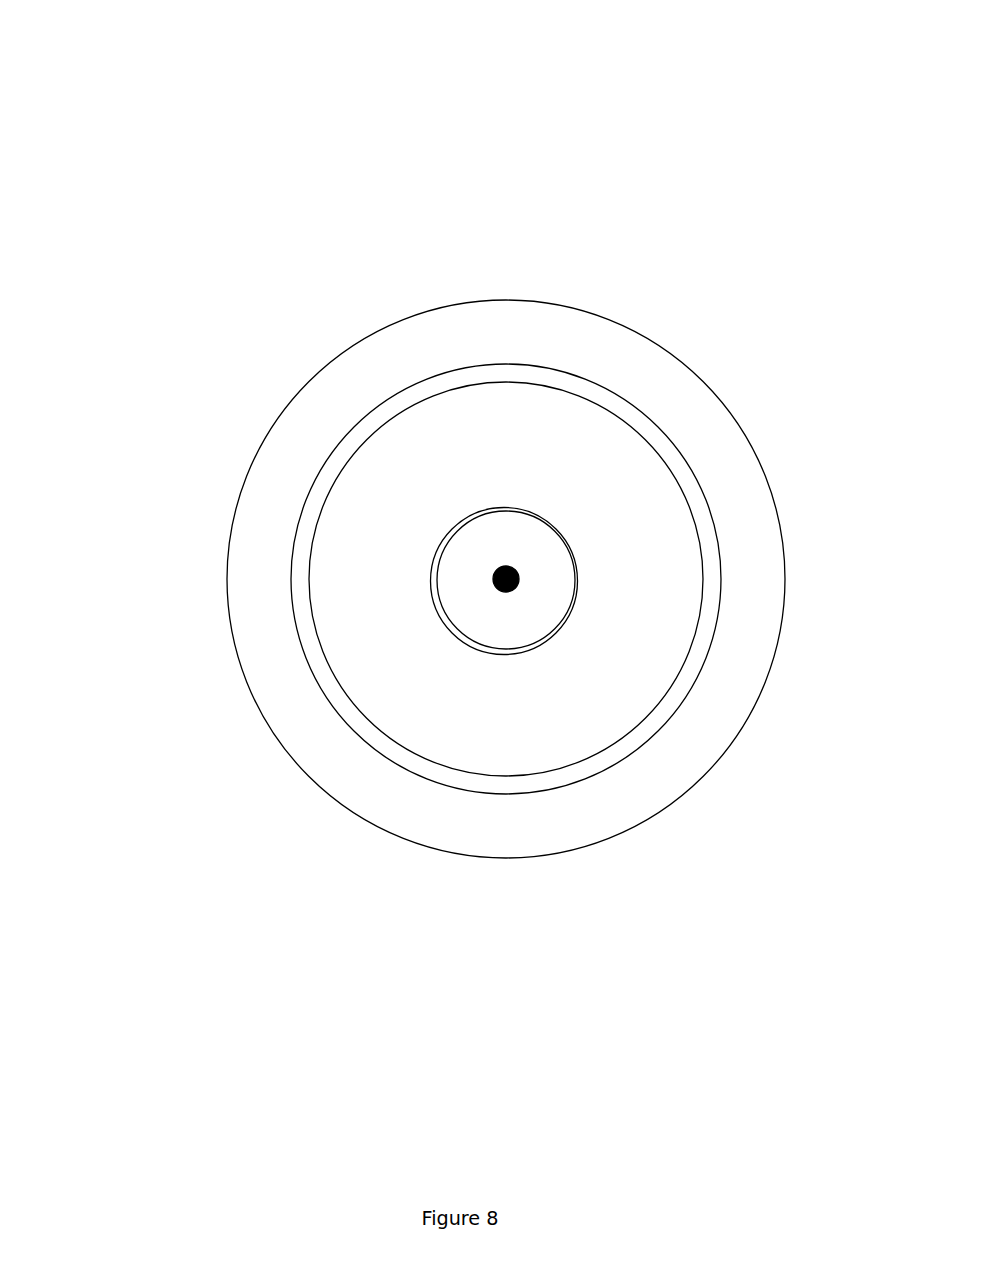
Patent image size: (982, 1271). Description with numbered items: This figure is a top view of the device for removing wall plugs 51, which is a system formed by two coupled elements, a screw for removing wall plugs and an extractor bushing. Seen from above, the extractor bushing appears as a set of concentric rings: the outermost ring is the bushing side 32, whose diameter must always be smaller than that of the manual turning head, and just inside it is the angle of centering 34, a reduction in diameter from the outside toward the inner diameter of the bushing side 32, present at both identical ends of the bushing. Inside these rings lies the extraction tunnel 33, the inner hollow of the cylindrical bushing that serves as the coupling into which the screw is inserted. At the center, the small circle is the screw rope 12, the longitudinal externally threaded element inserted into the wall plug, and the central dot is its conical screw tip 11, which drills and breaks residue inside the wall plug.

The device for removing wall plugs 51 is at (462, 263).
The bushing side 32 is at (270, 568).
The extraction tunnel 33 is at (582, 435).
The angle of centering 34 is at (337, 690).
The screw rope 12 is at (563, 532).
The screw tip 11 is at (515, 590).